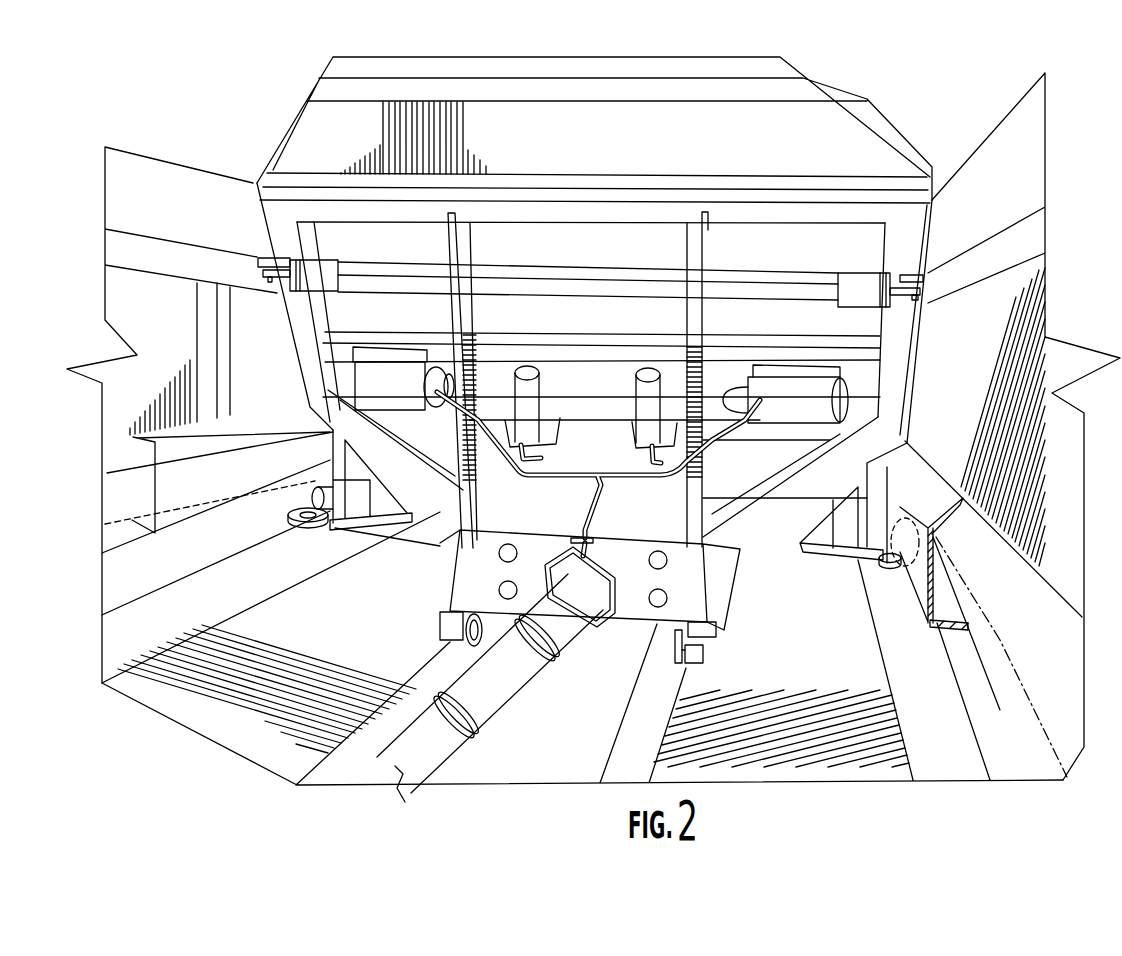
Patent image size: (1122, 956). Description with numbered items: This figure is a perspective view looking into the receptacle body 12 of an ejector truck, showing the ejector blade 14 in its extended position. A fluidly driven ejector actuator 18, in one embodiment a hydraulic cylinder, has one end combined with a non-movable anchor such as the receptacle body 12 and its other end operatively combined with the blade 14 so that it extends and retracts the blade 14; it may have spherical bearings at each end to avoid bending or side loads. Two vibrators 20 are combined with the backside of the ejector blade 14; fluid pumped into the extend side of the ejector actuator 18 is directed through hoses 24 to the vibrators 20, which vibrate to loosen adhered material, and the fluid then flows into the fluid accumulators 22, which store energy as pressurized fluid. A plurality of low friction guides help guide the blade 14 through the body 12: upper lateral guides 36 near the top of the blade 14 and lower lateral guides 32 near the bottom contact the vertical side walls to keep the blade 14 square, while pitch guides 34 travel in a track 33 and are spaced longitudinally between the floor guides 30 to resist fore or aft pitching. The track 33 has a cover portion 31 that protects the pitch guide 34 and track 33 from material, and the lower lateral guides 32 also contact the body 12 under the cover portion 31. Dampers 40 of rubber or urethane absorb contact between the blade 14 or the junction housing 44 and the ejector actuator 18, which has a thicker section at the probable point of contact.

The receptacle body 12 is at (185, 349).
The ejector blade 14 is at (575, 150).
The ejector actuator 18 is at (515, 702).
The vibrator 20 is at (393, 358).
The fluid accumulator 22 is at (634, 394).
The hoses 24 is at (582, 500).
The floor low friction guides 30 is at (465, 650).
The cover portion 31 is at (288, 428).
The lower lateral low friction guides 32 is at (287, 523).
The track 33 is at (203, 528).
The pitch low friction guides 34 is at (312, 492).
The upper lateral low friction guides 36 is at (256, 257).
The dampers 40 is at (539, 579).
The junction housing 44 is at (612, 558).